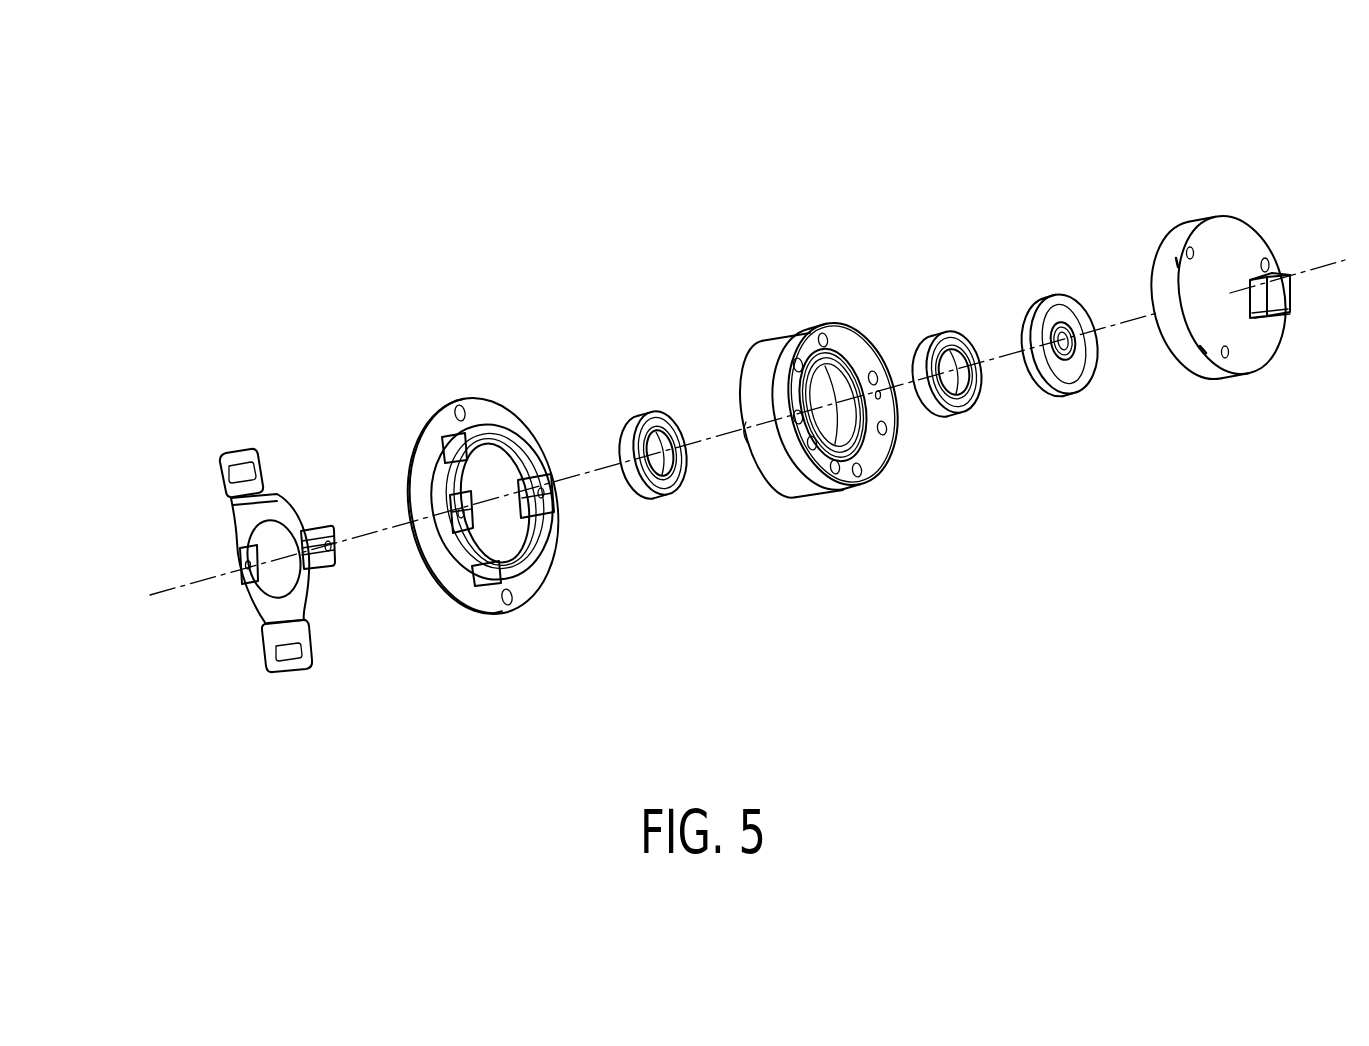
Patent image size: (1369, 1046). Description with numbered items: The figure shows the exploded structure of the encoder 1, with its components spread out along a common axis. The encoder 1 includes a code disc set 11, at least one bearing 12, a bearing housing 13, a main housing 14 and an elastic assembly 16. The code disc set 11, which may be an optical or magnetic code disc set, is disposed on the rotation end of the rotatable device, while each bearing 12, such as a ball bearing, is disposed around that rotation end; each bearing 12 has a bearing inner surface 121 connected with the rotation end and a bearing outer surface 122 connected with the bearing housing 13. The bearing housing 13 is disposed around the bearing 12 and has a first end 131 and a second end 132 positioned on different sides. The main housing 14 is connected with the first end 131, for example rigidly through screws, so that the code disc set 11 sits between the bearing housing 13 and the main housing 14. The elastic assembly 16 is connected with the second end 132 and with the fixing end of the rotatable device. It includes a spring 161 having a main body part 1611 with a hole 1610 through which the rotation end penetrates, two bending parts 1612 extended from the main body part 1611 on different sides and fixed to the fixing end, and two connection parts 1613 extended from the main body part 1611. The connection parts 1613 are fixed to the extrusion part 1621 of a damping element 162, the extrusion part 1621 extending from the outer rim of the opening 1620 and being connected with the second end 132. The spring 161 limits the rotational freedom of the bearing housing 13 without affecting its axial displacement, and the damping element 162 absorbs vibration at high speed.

The encoder 1 is at (1332, 108).
The code disc set 11 is at (1053, 297).
The bearing 12 is at (752, 628).
The bearing inner surface 121 is at (672, 458).
The bearing outer surface 122 is at (644, 488).
The bearing housing 13 is at (808, 615).
The first end 131 is at (877, 453).
The second end 132 is at (778, 487).
The main housing 14 is at (1175, 240).
The elastic assembly 16 is at (403, 303).
The spring 161 is at (270, 413).
The hole 1610 is at (282, 578).
The main body part 1611 is at (290, 527).
The bending part 1612 is at (287, 655).
The connection part 1613 is at (330, 555).
The damping element 162 is at (443, 364).
The opening 1620 is at (565, 560).
The extrusion part 1621 is at (493, 582).